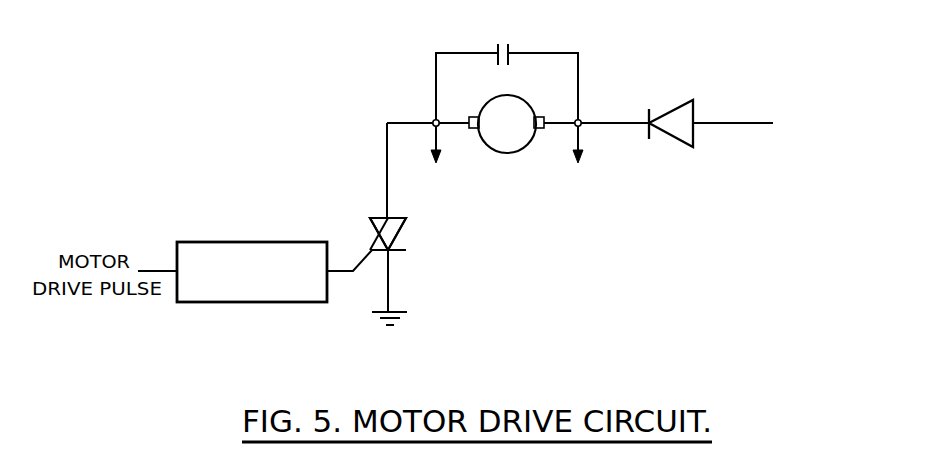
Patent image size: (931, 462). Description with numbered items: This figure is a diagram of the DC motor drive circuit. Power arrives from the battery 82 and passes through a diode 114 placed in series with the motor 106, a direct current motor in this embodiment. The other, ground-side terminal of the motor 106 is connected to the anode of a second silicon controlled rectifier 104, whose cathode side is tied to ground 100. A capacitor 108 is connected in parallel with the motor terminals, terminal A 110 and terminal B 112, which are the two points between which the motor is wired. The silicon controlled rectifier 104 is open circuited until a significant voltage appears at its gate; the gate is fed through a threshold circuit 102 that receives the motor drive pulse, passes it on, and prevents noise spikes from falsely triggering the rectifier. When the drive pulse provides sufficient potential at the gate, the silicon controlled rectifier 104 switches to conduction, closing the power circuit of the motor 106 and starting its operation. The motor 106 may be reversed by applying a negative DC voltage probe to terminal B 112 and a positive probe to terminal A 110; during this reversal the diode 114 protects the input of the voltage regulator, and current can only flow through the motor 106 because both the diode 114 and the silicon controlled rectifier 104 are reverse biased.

The battery 82 is at (784, 118).
The ground 100 is at (388, 328).
The threshold circuit 102 is at (225, 242).
The silicon controlled rectifier 104 is at (403, 224).
The motor 106 is at (500, 152).
The capacitor 108 is at (514, 46).
The terminal A 110 is at (448, 177).
The terminal B 112 is at (589, 177).
The diode 114 is at (667, 112).